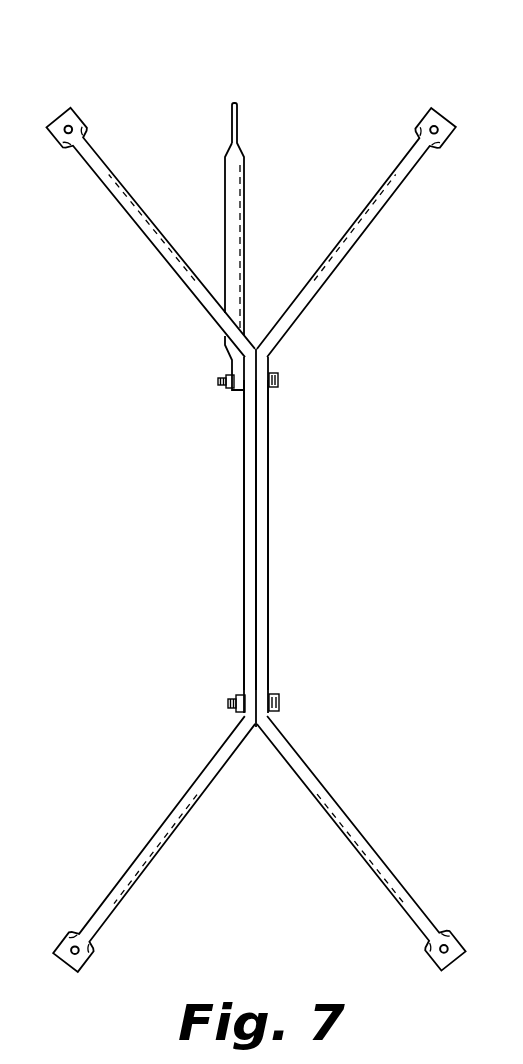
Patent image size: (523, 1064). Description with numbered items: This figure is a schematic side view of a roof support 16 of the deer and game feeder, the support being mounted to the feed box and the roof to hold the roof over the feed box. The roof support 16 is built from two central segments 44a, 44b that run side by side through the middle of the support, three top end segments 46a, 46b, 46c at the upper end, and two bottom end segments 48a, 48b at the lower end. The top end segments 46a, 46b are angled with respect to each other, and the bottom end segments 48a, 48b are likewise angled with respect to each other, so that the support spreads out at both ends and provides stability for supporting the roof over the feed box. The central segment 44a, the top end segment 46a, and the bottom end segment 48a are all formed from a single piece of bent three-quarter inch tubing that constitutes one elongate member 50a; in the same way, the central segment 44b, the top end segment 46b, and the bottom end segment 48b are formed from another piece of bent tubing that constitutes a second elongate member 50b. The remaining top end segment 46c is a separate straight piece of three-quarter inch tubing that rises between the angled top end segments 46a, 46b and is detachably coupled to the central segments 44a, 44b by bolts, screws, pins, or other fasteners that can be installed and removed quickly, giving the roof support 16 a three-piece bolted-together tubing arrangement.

The roof support 16 is at (236, 470).
The central segment 44a is at (245, 655).
The central segment 44b is at (270, 622).
The top end segment 46a is at (176, 280).
The top end segment 46b is at (337, 270).
The top end segment 46c is at (243, 178).
The bottom end segment 48a is at (165, 815).
The bottom end segment 48b is at (345, 815).
The elongate member 50a is at (64, 102).
The elongate member 50b is at (455, 102).